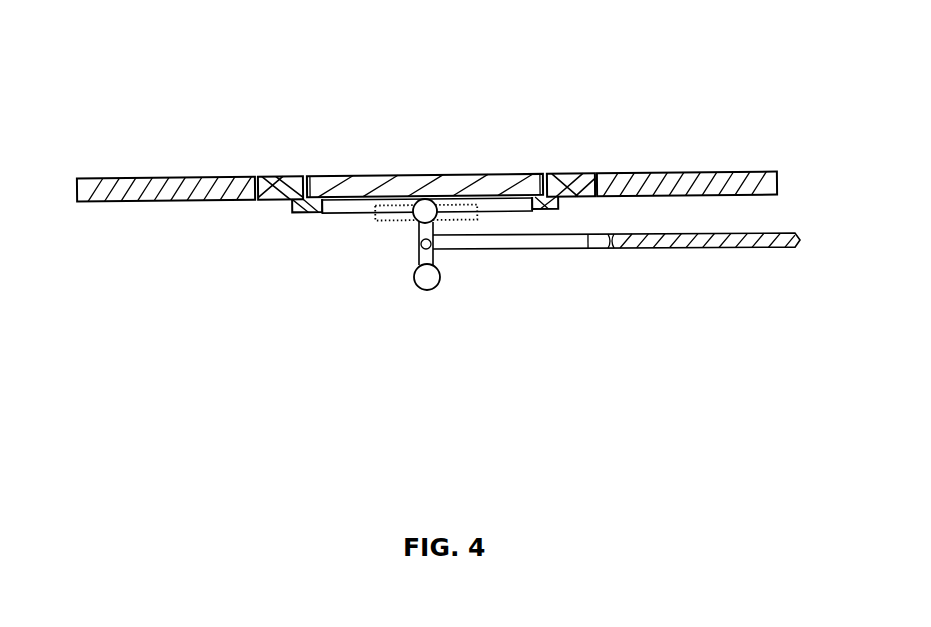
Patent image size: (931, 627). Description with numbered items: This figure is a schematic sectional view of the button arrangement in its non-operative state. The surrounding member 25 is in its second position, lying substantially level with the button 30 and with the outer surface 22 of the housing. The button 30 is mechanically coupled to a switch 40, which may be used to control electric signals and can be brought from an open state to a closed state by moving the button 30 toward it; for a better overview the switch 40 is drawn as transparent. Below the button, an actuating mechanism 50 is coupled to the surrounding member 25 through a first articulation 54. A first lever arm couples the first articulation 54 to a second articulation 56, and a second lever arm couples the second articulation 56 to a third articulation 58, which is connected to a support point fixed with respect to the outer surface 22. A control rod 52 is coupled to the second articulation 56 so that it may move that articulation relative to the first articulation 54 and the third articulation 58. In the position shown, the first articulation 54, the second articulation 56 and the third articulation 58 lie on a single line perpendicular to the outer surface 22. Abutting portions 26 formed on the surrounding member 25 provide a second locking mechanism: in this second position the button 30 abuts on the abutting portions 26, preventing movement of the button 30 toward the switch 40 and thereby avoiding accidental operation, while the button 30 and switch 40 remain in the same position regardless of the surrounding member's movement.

The outer surface of the housing 22 is at (172, 176).
The surrounding member 25 is at (283, 174).
The button 30 is at (435, 172).
The abutting portions 26 is at (290, 204).
The switch 40 is at (375, 213).
The actuating mechanism 50 is at (477, 292).
The control rod 52 is at (625, 250).
The first articulation 54 is at (413, 219).
The second articulation 56 is at (417, 248).
The third articulation 58 is at (422, 291).